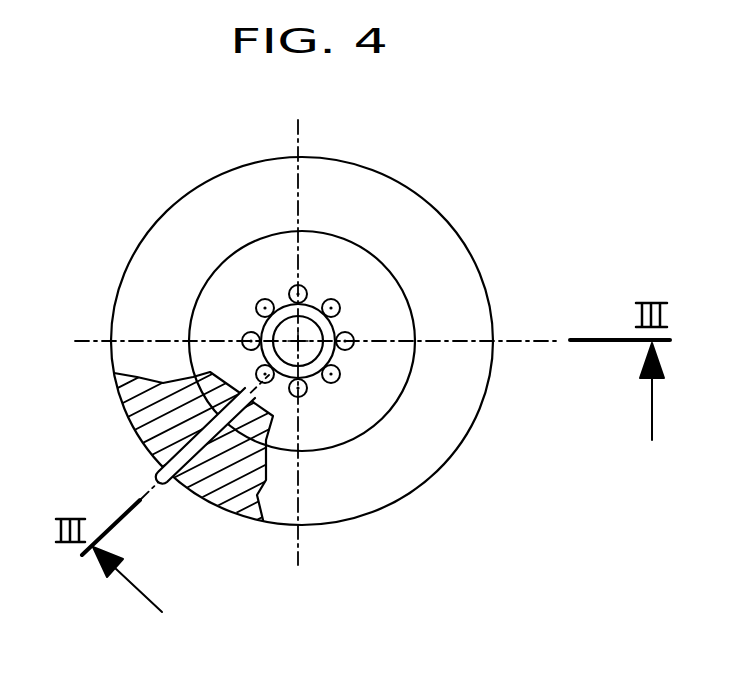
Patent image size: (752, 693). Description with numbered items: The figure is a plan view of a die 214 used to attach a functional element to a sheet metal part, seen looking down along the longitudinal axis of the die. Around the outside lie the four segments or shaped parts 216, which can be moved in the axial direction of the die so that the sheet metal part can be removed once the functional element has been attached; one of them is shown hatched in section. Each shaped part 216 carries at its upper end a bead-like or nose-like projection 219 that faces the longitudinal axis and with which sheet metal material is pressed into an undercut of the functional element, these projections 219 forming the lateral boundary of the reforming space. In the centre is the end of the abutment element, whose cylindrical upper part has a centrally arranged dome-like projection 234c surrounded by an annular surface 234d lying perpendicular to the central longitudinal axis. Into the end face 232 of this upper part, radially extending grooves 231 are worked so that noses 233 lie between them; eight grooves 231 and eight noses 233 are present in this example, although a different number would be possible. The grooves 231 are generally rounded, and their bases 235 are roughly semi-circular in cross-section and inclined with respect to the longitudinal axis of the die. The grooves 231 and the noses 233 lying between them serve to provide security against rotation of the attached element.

The rotor assembly 214 is at (460, 212).
The shaped parts 216 is at (220, 277).
The nose-like projection 219 is at (257, 323).
The radially extending grooves 231 is at (265, 300).
The end face 232 is at (200, 331).
The noses 233 is at (278, 293).
The dome-like projection 234c is at (350, 357).
The annular surface 234d is at (325, 300).
The bases of the grooves 235 is at (312, 297).